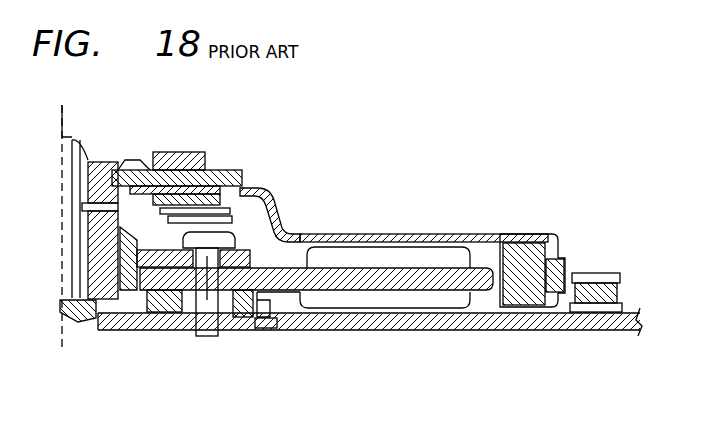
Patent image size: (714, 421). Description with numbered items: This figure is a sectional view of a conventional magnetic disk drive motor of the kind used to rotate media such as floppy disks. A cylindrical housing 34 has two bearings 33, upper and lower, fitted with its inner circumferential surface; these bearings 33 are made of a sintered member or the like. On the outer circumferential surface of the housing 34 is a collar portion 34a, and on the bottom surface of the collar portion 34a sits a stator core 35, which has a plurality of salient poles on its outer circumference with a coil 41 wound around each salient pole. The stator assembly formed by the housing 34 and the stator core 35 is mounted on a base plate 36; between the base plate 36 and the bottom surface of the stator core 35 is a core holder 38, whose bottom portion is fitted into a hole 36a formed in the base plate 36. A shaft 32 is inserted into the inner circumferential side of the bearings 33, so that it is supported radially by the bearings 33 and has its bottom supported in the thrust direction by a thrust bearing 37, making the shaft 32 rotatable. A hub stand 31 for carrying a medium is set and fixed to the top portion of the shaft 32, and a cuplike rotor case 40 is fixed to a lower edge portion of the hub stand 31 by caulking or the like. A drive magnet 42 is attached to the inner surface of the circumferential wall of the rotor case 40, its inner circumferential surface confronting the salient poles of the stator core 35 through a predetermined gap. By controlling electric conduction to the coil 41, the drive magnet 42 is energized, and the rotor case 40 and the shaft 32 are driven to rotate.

The hub stand 31 is at (142, 168).
The shaft 32 is at (76, 142).
The bearings 33 is at (98, 192).
The housing 34 is at (98, 224).
The collar portion 34a is at (272, 230).
The stator core 35 is at (306, 284).
The base plate 36 is at (556, 322).
The hole 36a is at (264, 330).
The thrust bearing 37 is at (80, 320).
The core holder 38 is at (158, 314).
The rotor case 40 is at (362, 234).
The coil 41 is at (410, 304).
The drive magnet 42 is at (508, 250).